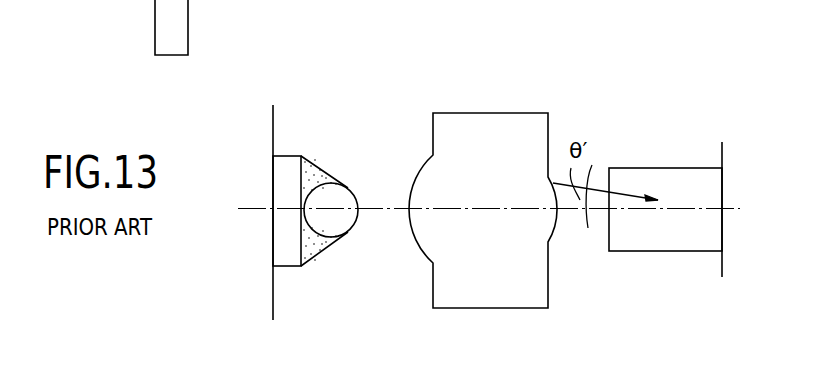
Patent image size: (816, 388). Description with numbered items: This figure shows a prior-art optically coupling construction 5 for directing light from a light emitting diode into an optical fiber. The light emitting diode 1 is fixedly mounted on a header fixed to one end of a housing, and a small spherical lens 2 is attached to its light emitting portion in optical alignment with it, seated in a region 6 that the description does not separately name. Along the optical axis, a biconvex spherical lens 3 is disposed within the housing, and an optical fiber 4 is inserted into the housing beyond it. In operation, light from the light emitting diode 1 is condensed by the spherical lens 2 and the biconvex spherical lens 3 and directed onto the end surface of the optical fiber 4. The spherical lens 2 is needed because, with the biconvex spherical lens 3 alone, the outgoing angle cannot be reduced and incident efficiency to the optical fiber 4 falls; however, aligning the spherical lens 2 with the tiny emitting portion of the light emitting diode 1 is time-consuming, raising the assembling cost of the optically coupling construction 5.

The light emitting diode 1 is at (287, 255).
The spherical lens 2 is at (342, 197).
The biconvex spherical lens 3 is at (473, 288).
The optical fiber 4 is at (657, 240).
The optically coupling construction 5 is at (523, 100).
The conical seat 6 is at (320, 247).